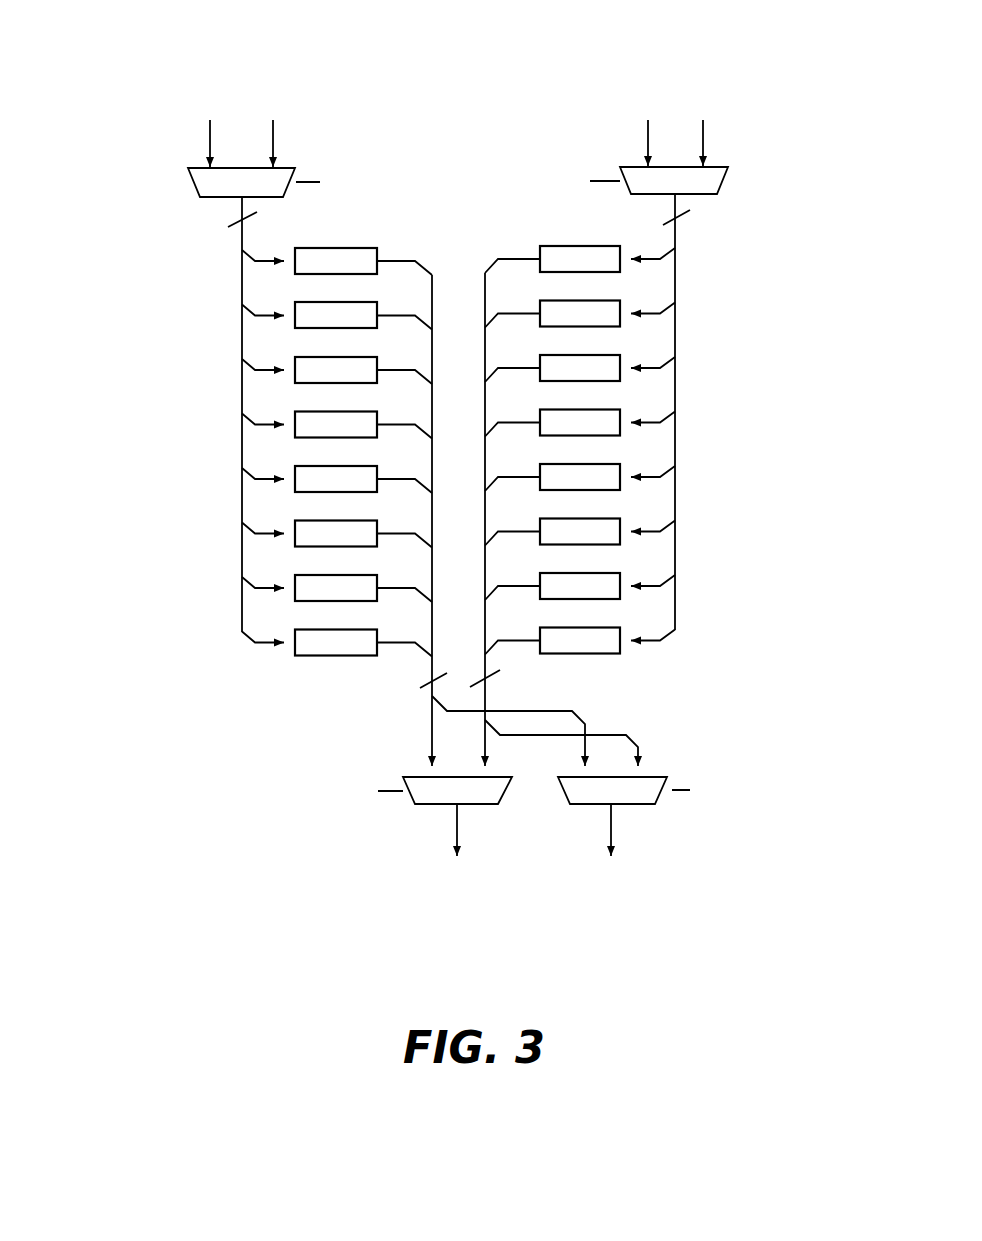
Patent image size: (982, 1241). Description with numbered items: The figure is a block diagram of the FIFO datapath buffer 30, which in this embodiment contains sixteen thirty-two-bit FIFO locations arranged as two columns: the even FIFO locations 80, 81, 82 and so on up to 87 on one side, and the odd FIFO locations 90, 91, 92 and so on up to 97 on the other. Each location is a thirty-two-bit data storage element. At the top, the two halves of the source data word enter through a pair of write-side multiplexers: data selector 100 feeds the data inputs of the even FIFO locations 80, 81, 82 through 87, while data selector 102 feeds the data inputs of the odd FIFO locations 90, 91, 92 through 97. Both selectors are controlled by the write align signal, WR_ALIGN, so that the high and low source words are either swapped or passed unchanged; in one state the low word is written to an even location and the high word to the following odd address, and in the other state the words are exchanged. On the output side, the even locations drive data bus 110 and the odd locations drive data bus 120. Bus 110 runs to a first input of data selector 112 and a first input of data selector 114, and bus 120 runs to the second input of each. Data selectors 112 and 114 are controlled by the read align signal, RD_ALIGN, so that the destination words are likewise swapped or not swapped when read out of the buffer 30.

The FIFO datapath buffer 30 is at (330, 48).
The data selector 102 is at (192, 185).
The data selector 100 is at (727, 178).
The odd FIFO location 97 is at (358, 248).
The even FIFO location 87 is at (597, 246).
The odd FIFO location 92 is at (363, 520).
The odd FIFO location 91 is at (363, 575).
The odd FIFO location 90 is at (365, 629).
The even FIFO location 82 is at (610, 518).
The even FIFO location 81 is at (610, 573).
The even FIFO location 80 is at (610, 627).
The data bus 110 is at (484, 446).
The data bus 120 is at (434, 587).
The data selector 114 is at (422, 777).
The data selector 112 is at (650, 777).